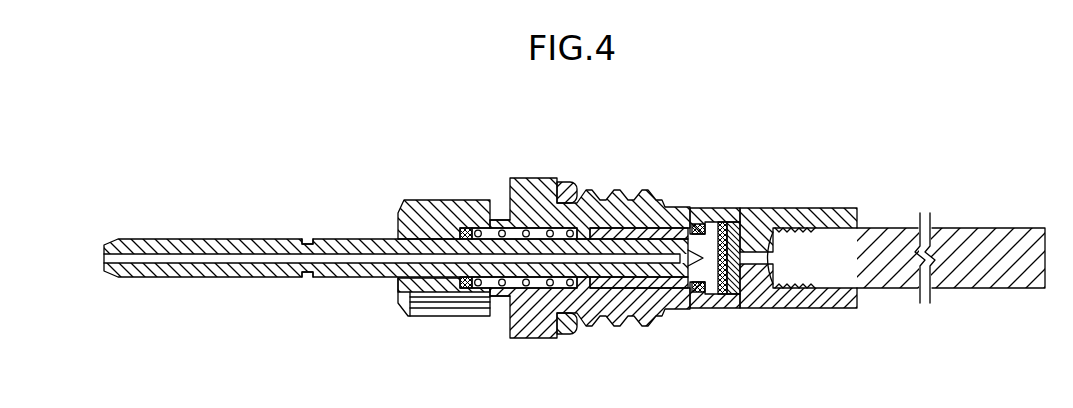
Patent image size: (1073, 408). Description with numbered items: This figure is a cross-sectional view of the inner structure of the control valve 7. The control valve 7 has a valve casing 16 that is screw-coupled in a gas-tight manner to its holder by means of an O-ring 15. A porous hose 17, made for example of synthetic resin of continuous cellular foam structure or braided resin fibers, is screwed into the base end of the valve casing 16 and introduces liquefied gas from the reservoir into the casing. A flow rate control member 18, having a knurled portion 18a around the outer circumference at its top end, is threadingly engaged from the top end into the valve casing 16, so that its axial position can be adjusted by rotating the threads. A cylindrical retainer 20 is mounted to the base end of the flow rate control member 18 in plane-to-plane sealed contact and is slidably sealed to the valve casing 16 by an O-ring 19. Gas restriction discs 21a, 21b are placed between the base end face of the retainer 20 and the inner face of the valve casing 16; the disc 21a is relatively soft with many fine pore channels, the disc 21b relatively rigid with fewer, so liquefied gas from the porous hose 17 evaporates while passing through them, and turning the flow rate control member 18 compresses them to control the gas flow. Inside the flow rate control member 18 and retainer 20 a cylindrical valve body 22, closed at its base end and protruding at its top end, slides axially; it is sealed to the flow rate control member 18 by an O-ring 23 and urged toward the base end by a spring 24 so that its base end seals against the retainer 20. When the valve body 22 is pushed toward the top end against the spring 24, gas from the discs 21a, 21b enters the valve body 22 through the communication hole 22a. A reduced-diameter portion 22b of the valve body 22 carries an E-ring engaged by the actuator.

The control valve 7 is at (746, 194).
The O-ring 15 is at (572, 192).
The valve casing 16 is at (537, 188).
The porous hose 17 is at (968, 245).
The flow rate control member 18 is at (400, 215).
The knurled portion 18a is at (425, 304).
The O-ring 19 is at (694, 222).
The retainer 20 is at (684, 290).
The gas restriction disc 21a is at (723, 296).
The gas restriction disc 21b is at (736, 296).
The valve body 22 is at (176, 240).
The communication hole 22a is at (604, 243).
The reduced-diameter portion 22b is at (307, 281).
The O-ring 23 is at (466, 227).
The spring 24 is at (499, 297).